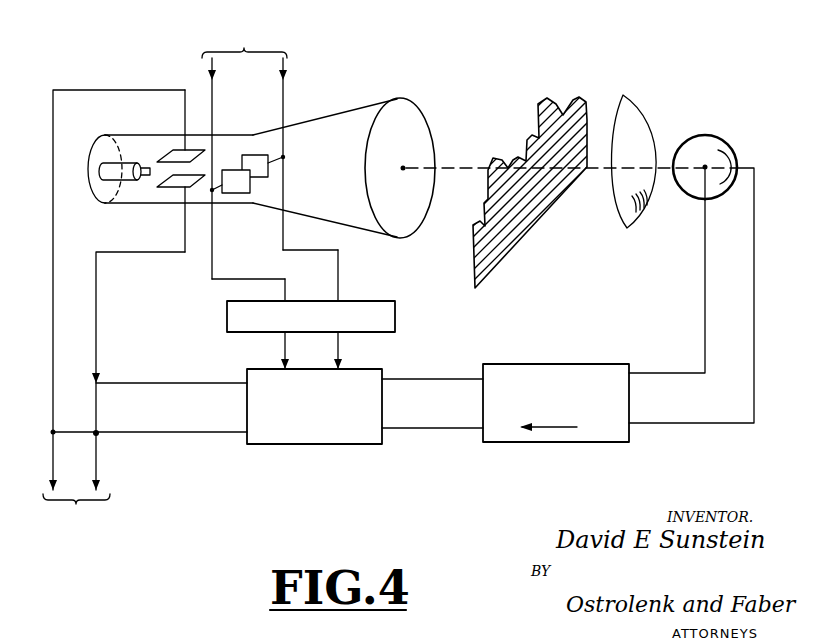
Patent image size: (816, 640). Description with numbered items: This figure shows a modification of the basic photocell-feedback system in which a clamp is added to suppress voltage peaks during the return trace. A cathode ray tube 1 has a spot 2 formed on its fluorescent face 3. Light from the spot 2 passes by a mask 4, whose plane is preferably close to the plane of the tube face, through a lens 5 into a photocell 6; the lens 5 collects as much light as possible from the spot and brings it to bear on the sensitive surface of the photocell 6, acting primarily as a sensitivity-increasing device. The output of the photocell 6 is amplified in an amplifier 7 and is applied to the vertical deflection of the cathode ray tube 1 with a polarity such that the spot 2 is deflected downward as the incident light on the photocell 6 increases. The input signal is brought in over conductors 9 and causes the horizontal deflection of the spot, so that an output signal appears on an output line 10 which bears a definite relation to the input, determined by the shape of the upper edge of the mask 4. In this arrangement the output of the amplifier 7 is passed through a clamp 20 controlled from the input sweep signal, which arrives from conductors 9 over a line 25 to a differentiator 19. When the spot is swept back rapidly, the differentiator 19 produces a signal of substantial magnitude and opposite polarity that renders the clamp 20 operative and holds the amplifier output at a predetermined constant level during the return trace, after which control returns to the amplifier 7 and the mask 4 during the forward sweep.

The cathode ray tube 1 is at (357, 105).
The spot 2 is at (408, 166).
The fluorescent face 3 is at (420, 106).
The mask 4 is at (551, 103).
The lens 5 is at (632, 105).
The photocell 6 is at (700, 143).
The amplifier 7 is at (578, 364).
The conductors 9 is at (283, 90).
The output line 10 is at (96, 456).
The differentiator 19 is at (395, 318).
The clamp 20 is at (382, 375).
The line 25 is at (283, 225).